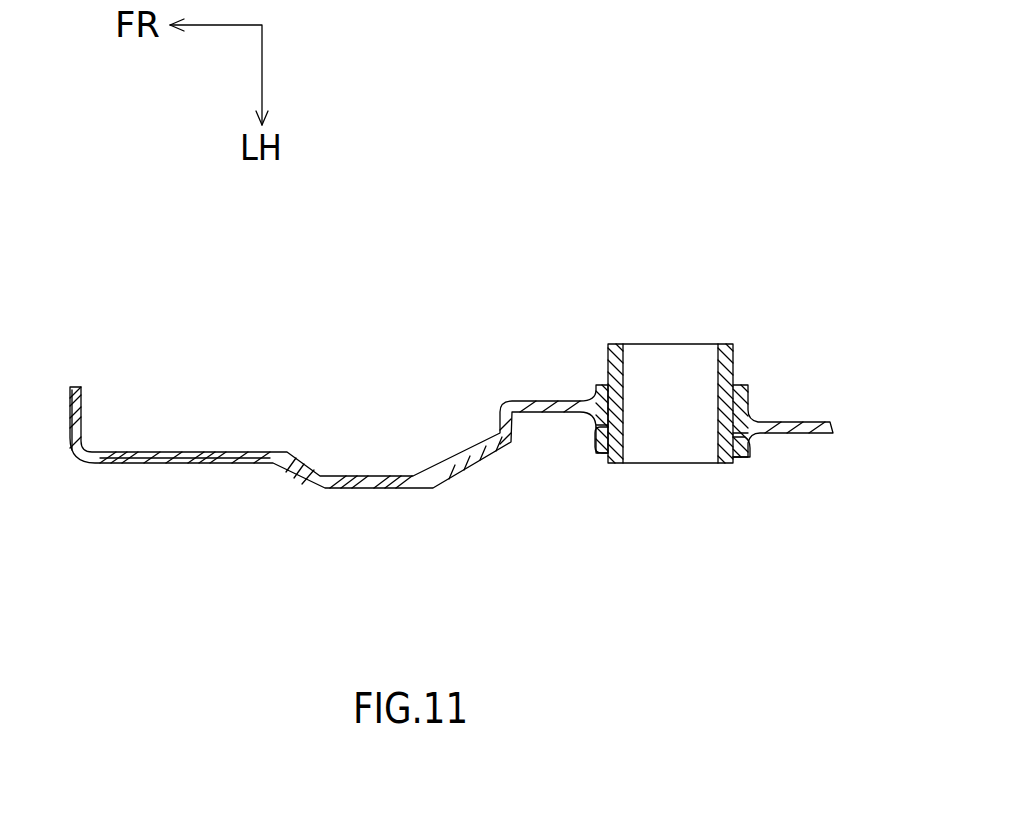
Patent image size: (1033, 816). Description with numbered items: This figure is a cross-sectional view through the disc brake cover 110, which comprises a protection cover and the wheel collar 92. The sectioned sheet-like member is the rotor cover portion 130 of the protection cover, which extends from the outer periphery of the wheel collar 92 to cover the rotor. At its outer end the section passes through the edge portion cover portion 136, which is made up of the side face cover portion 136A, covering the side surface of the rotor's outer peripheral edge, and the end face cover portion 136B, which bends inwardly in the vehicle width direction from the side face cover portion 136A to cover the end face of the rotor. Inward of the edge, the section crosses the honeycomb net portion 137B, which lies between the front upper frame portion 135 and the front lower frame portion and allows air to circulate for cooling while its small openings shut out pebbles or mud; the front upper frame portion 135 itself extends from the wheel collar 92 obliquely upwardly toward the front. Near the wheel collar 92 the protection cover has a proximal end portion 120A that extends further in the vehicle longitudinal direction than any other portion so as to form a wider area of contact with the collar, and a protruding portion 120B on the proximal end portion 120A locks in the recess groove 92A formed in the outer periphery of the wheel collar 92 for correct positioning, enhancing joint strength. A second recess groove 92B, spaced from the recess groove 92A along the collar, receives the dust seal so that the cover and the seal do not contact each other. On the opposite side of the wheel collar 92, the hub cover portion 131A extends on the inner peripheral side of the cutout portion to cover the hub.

The disc brake cover 110 is at (325, 405).
The rotor cover portion 130 is at (502, 432).
The front upper frame portion 135 is at (405, 490).
The edge portion cover portion 136 is at (232, 547).
The side face cover portion 136A is at (132, 460).
The end face cover portion 136B is at (68, 417).
The honeycomb net portion 137B is at (233, 457).
The wheel collar 92 is at (617, 344).
The recess groove 92A is at (600, 447).
The recess groove 92B is at (604, 359).
The proximal end portion 120A is at (588, 390).
The protruding portion 120B is at (627, 432).
The hub cover portion 131A is at (800, 422).